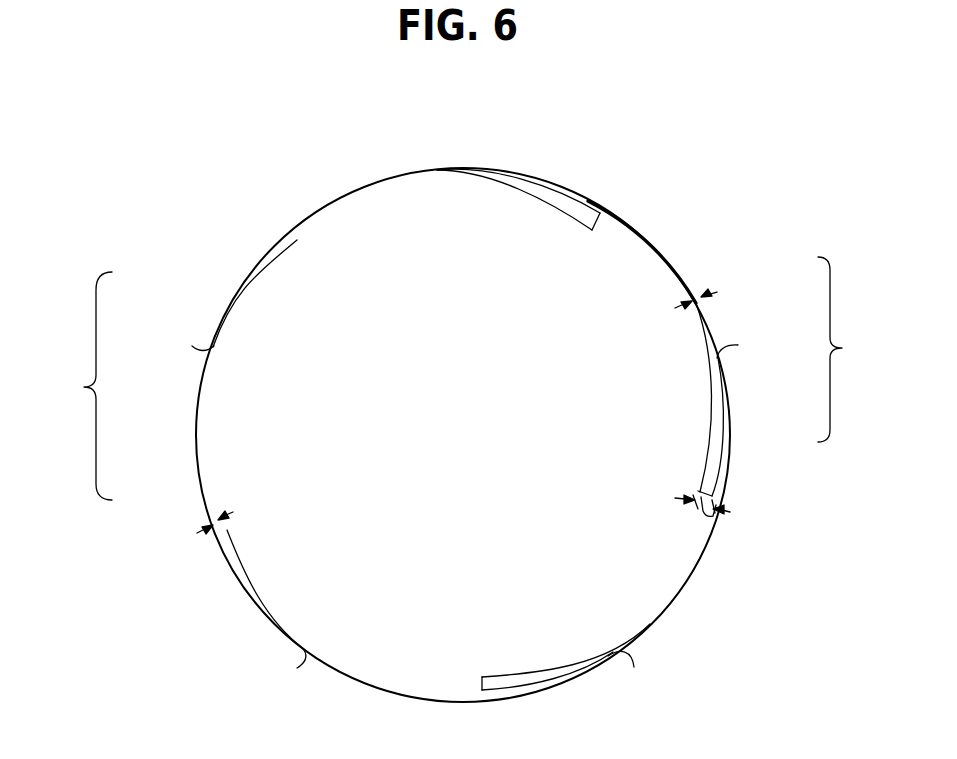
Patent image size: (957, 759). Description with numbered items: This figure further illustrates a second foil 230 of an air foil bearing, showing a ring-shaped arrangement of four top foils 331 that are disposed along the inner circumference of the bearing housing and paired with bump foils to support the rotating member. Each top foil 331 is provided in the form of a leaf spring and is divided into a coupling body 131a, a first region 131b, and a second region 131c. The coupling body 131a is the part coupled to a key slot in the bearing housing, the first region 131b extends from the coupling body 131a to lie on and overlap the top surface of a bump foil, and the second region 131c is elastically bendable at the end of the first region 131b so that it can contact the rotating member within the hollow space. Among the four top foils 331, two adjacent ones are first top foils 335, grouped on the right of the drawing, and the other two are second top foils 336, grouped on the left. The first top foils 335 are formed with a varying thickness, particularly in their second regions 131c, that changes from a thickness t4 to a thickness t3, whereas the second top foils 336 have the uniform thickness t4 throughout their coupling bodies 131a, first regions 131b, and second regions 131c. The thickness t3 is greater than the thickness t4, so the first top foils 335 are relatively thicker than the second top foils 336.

The second foil 230 is at (145, 106).
The coupling body 131a is at (475, 171).
The first region 131b is at (652, 244).
The second region 131c is at (707, 441).
The top foil 331 is at (264, 263).
The first top foil 335 is at (854, 349).
The second top foil 336 is at (73, 386).
The thickness t3 is at (743, 548).
The thickness t4 is at (686, 308).